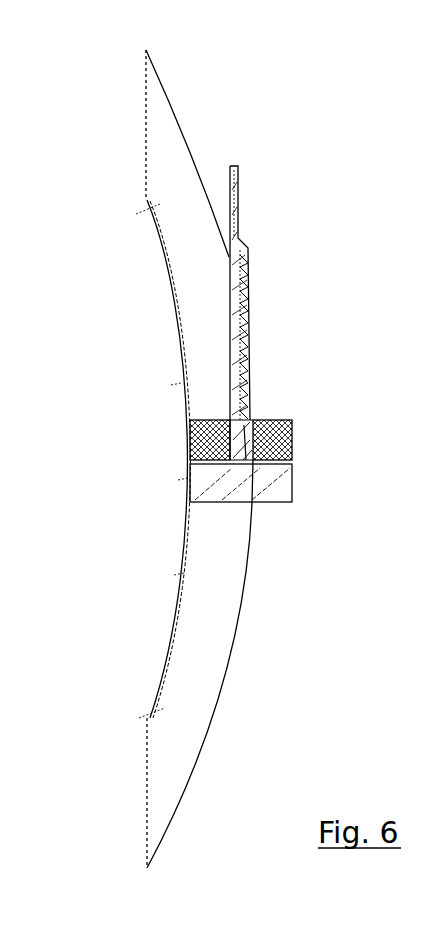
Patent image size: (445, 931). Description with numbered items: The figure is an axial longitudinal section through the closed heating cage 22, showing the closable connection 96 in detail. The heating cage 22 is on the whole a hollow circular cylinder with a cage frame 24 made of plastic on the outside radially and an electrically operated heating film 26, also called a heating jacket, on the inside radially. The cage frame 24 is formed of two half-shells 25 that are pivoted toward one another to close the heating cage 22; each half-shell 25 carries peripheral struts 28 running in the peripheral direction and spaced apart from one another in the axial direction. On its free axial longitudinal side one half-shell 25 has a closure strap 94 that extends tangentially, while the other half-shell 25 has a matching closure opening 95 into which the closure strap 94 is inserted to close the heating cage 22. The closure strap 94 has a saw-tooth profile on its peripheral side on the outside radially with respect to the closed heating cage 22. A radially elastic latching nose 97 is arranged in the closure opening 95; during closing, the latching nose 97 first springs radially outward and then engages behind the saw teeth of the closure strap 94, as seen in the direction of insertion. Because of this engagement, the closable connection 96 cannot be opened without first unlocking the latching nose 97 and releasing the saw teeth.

The heating cage 22 is at (140, 202).
The cage frame 24 is at (205, 671).
The half-shell 25 is at (148, 133).
The heating film 26 is at (175, 593).
The peripheral strut 28 is at (170, 138).
The closure strap 94 is at (236, 312).
The closure opening 95 is at (250, 452).
The closable connection 96 is at (265, 408).
The latching nose 97 is at (250, 435).